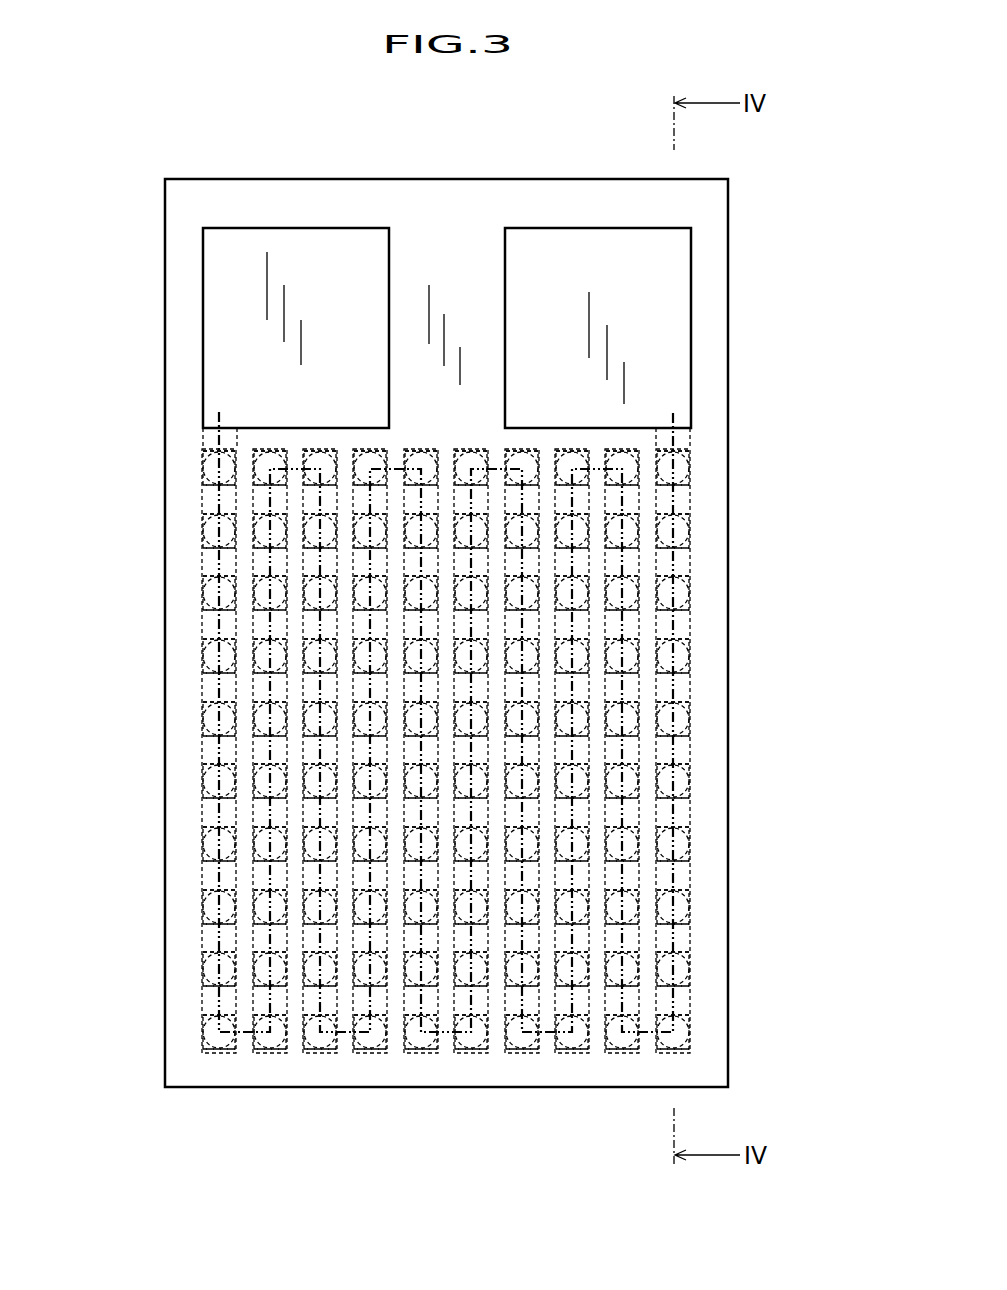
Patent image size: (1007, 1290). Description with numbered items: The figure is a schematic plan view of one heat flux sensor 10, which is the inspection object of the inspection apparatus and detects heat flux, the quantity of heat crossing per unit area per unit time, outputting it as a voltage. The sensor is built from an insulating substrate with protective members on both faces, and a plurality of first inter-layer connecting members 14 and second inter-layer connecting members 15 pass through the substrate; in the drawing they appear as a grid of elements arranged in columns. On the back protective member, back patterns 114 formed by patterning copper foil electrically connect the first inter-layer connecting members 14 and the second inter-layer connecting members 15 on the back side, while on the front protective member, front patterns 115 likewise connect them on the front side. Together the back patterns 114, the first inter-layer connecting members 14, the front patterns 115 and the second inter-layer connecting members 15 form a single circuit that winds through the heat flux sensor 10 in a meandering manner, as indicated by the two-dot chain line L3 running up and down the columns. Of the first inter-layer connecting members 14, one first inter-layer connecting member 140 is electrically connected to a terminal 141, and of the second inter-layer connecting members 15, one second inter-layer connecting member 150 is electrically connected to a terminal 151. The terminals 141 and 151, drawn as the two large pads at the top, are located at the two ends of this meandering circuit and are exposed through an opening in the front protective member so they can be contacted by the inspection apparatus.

The heat flux sensor 10 is at (342, 177).
The terminal 151 is at (228, 322).
The terminal 141 is at (654, 350).
The second inter-layer connecting member 150 is at (203, 453).
The first inter-layer connecting member 140 is at (691, 453).
The front patterns 115 is at (691, 552).
The first inter-layer connecting members 14 is at (691, 580).
The back patterns 114 is at (691, 488).
The second inter-layer connecting members 15 is at (691, 512).
The two-dot chain line L3 is at (218, 622).